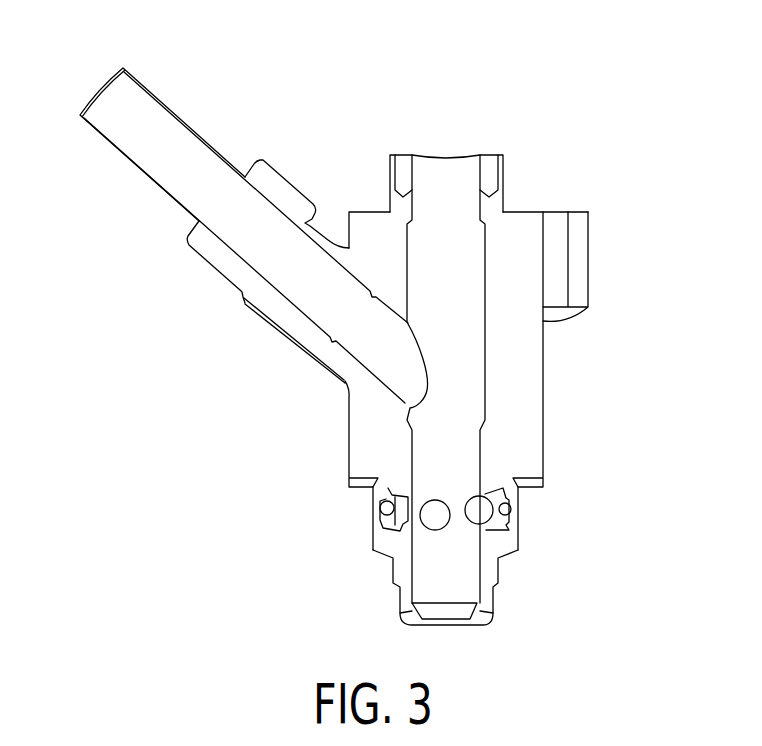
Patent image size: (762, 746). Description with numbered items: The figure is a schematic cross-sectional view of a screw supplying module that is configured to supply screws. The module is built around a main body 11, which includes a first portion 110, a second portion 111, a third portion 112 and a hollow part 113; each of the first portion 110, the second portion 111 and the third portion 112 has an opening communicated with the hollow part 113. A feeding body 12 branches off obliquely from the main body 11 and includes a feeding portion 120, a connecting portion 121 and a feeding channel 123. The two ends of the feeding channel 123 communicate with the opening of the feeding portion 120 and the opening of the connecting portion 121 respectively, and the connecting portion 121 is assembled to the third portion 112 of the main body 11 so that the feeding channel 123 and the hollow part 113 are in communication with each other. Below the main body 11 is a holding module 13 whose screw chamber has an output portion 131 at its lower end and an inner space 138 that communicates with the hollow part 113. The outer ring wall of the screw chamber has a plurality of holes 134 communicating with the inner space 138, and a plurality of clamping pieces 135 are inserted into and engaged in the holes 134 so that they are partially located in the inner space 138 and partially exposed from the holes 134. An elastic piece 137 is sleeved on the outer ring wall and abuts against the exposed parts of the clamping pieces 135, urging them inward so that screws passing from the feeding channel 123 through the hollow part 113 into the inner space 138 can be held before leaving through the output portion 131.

The main body 11 is at (637, 350).
The first portion 110 is at (503, 170).
The second portion 111 is at (544, 454).
The third portion 112 is at (348, 366).
The hollow part 113 is at (438, 187).
The feeding body 12 is at (155, 315).
The feeding portion 120 is at (134, 78).
The connecting portion 121 is at (323, 335).
The feeding channel 123 is at (163, 160).
The holding module 13 is at (587, 620).
The output portion 131 is at (493, 615).
The holes 134 is at (432, 520).
The clamping pieces 135 is at (486, 525).
The elastic piece 137 is at (508, 504).
The inner space 138 is at (448, 562).